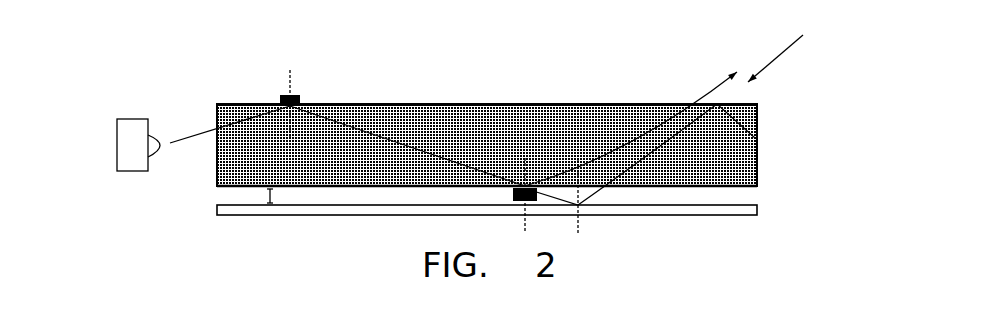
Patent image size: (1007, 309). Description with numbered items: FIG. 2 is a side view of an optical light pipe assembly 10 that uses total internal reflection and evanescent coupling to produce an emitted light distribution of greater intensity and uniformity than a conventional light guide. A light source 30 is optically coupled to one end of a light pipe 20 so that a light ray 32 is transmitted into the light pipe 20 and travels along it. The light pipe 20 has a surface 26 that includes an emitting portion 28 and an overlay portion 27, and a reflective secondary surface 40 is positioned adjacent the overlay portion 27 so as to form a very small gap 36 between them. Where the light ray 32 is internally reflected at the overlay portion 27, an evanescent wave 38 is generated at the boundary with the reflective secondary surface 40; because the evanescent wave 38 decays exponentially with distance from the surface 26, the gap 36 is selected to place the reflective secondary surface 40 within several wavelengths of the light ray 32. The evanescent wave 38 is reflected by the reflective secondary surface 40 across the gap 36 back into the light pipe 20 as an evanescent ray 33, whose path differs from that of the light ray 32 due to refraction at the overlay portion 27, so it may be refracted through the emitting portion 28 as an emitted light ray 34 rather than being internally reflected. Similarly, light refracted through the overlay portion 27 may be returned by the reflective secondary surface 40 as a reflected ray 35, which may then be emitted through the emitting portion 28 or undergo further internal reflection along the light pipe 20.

The optical light pipe assembly 10 is at (791, 44).
The light pipe 20 is at (381, 104).
The surface 26 is at (457, 104).
The overlay portion 27 is at (730, 187).
The emitting portion 28 is at (535, 104).
The light source 30 is at (132, 118).
The light ray 32 is at (227, 106).
The evanescent ray 33 is at (678, 104).
The emitted light ray 34 is at (705, 104).
The reflected ray 35 is at (596, 194).
The gap 36 is at (265, 196).
The evanescent wave 38 is at (302, 95).
The reflective secondary surface 40 is at (715, 215).